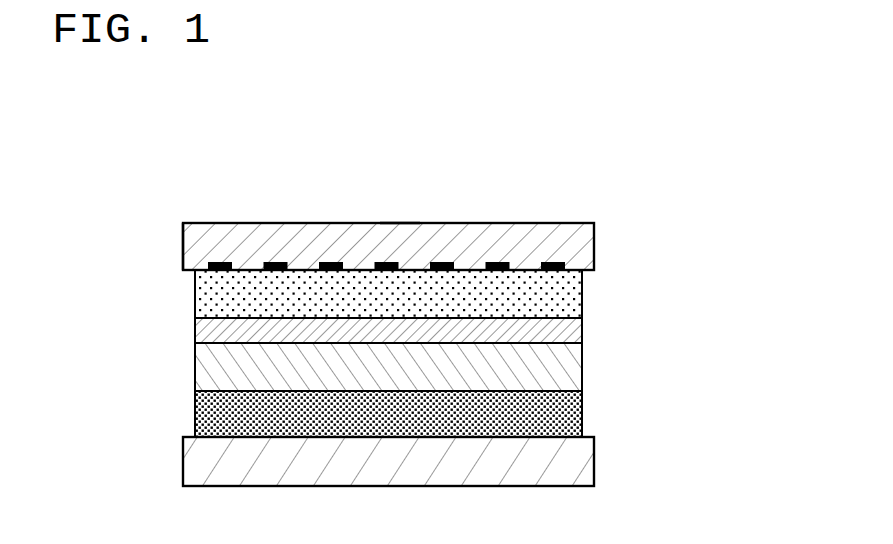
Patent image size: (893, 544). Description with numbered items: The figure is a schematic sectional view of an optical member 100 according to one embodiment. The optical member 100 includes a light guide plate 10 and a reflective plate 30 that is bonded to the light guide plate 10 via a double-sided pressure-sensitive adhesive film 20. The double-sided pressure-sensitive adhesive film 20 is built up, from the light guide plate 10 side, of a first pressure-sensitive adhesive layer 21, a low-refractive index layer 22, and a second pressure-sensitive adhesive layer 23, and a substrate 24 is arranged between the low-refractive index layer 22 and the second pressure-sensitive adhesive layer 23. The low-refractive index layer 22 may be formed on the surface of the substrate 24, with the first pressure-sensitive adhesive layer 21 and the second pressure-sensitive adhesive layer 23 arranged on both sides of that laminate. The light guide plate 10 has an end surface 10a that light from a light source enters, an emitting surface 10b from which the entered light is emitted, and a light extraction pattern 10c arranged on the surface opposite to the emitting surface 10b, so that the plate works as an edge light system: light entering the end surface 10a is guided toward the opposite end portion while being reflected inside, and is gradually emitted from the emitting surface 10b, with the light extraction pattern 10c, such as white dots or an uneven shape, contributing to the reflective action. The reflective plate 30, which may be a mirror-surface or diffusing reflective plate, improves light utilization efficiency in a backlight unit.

The optical member 100 is at (427, 293).
The light guide plate 10 is at (427, 195).
The end surface 10a is at (183, 243).
The emitting surface 10b is at (401, 222).
The light extraction pattern 10c is at (277, 262).
The double-sided pressure-sensitive adhesive film 20 is at (483, 349).
The first pressure-sensitive adhesive layer 21 is at (582, 293).
The low-refractive index layer 22 is at (582, 328).
The second pressure-sensitive adhesive layer 23 is at (451, 414).
The substrate 24 is at (582, 363).
The reflective plate 30 is at (580, 457).